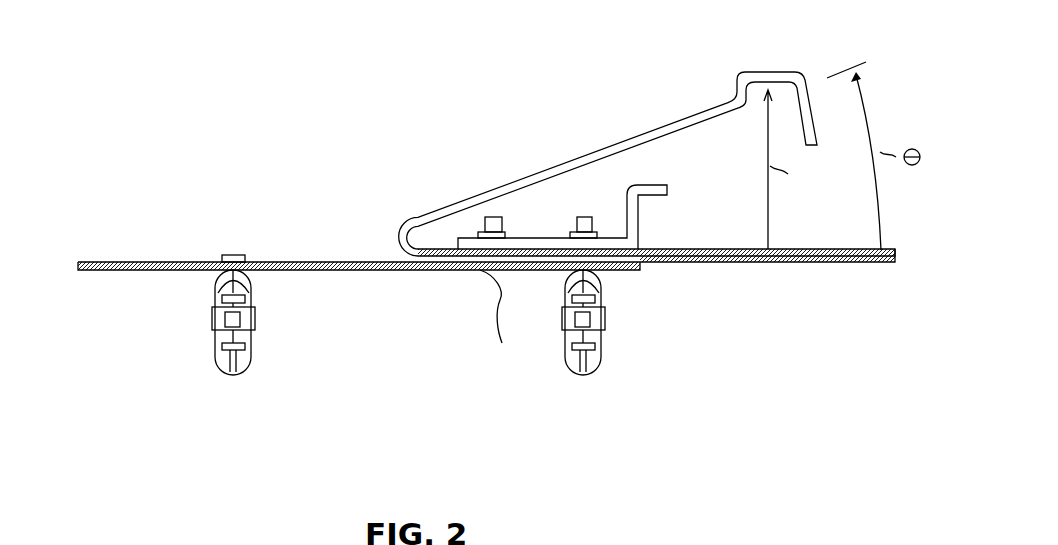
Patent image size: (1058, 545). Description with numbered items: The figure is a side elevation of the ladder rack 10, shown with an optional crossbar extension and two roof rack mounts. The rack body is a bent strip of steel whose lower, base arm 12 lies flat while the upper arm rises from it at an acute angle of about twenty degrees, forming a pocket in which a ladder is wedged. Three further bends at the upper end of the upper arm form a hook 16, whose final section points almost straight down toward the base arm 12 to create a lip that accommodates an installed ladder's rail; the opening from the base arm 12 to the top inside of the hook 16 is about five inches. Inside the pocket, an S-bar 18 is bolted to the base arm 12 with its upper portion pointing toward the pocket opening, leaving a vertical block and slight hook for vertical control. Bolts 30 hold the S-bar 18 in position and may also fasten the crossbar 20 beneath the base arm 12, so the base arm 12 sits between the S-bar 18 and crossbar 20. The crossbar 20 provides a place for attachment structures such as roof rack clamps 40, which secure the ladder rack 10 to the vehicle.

The ladder rack 10 is at (659, 145).
The base arm 12 is at (822, 262).
The hook 16 is at (765, 73).
The S-bar 18 is at (660, 184).
The crossbar 20 is at (163, 261).
The bolts 30 is at (573, 273).
The roof rack clamps 40 is at (245, 337).